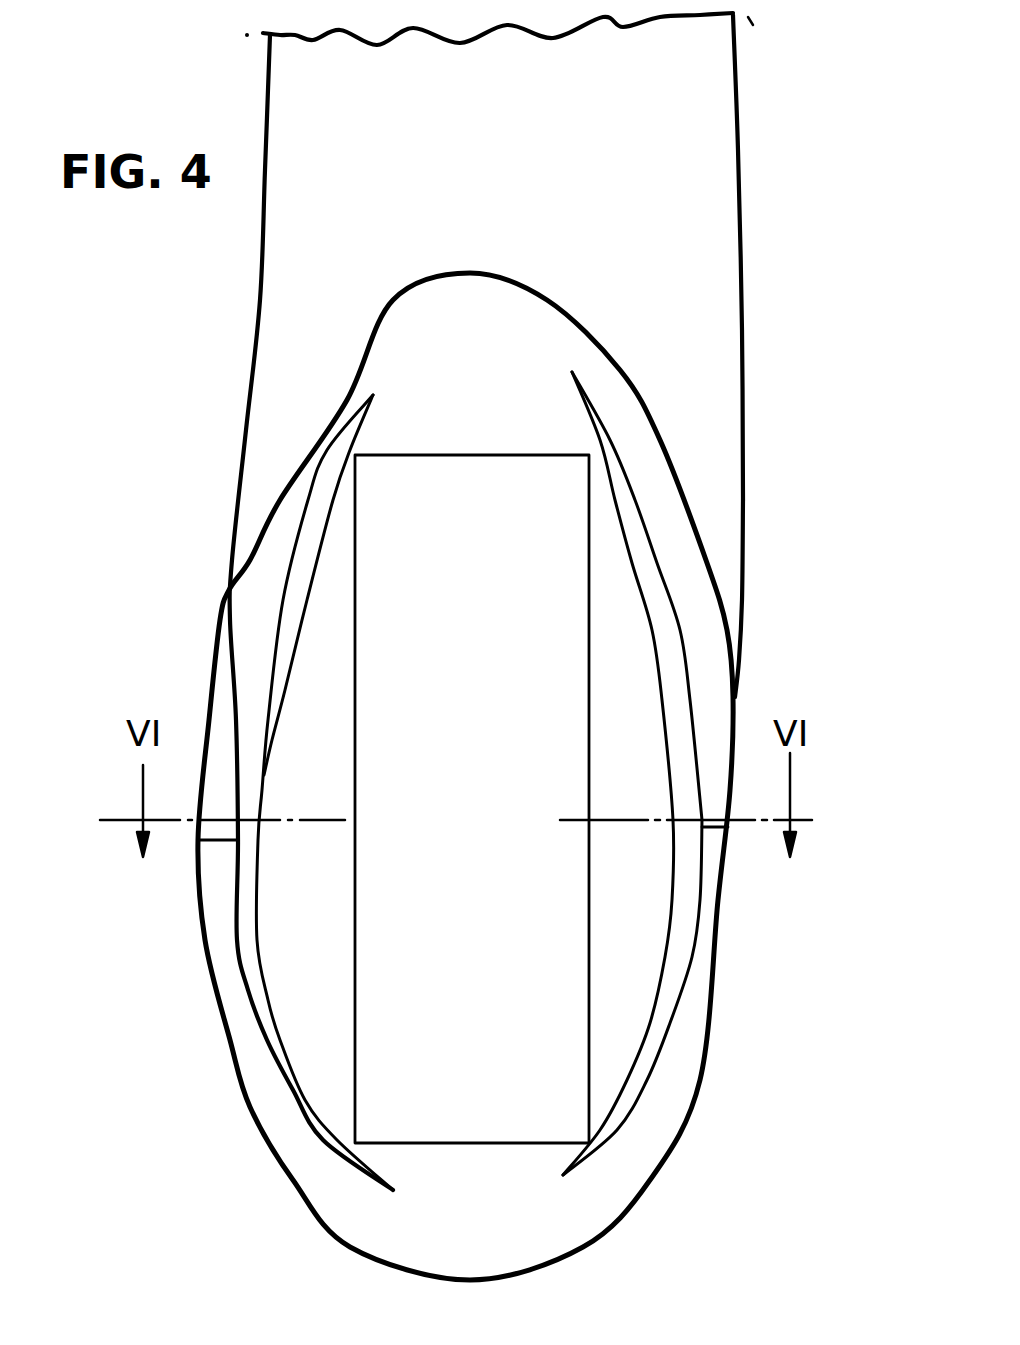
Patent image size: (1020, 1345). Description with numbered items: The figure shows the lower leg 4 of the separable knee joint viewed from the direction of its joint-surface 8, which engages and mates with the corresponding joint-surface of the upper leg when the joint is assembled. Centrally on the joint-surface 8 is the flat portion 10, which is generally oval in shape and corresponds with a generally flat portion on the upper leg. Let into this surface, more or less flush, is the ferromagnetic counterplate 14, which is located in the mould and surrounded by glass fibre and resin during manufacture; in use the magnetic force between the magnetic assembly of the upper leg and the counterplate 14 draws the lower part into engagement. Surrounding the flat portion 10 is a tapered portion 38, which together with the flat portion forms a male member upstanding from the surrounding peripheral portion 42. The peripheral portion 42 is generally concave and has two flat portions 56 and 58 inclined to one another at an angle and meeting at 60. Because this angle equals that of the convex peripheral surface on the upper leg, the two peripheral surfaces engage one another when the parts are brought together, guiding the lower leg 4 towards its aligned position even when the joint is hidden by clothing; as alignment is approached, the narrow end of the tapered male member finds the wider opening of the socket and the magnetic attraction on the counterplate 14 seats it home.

The lower leg 4 is at (742, 203).
The joint-surface 8 is at (322, 682).
The flat portion 10 is at (640, 663).
The ferromagnetic counterplate 14 is at (567, 572).
The tapered portion 38 is at (283, 617).
The peripheral portion 42 is at (218, 957).
The flat portion 56 is at (720, 702).
The flat portion 58 is at (688, 1053).
The meeting point of flat portions 60 is at (713, 832).